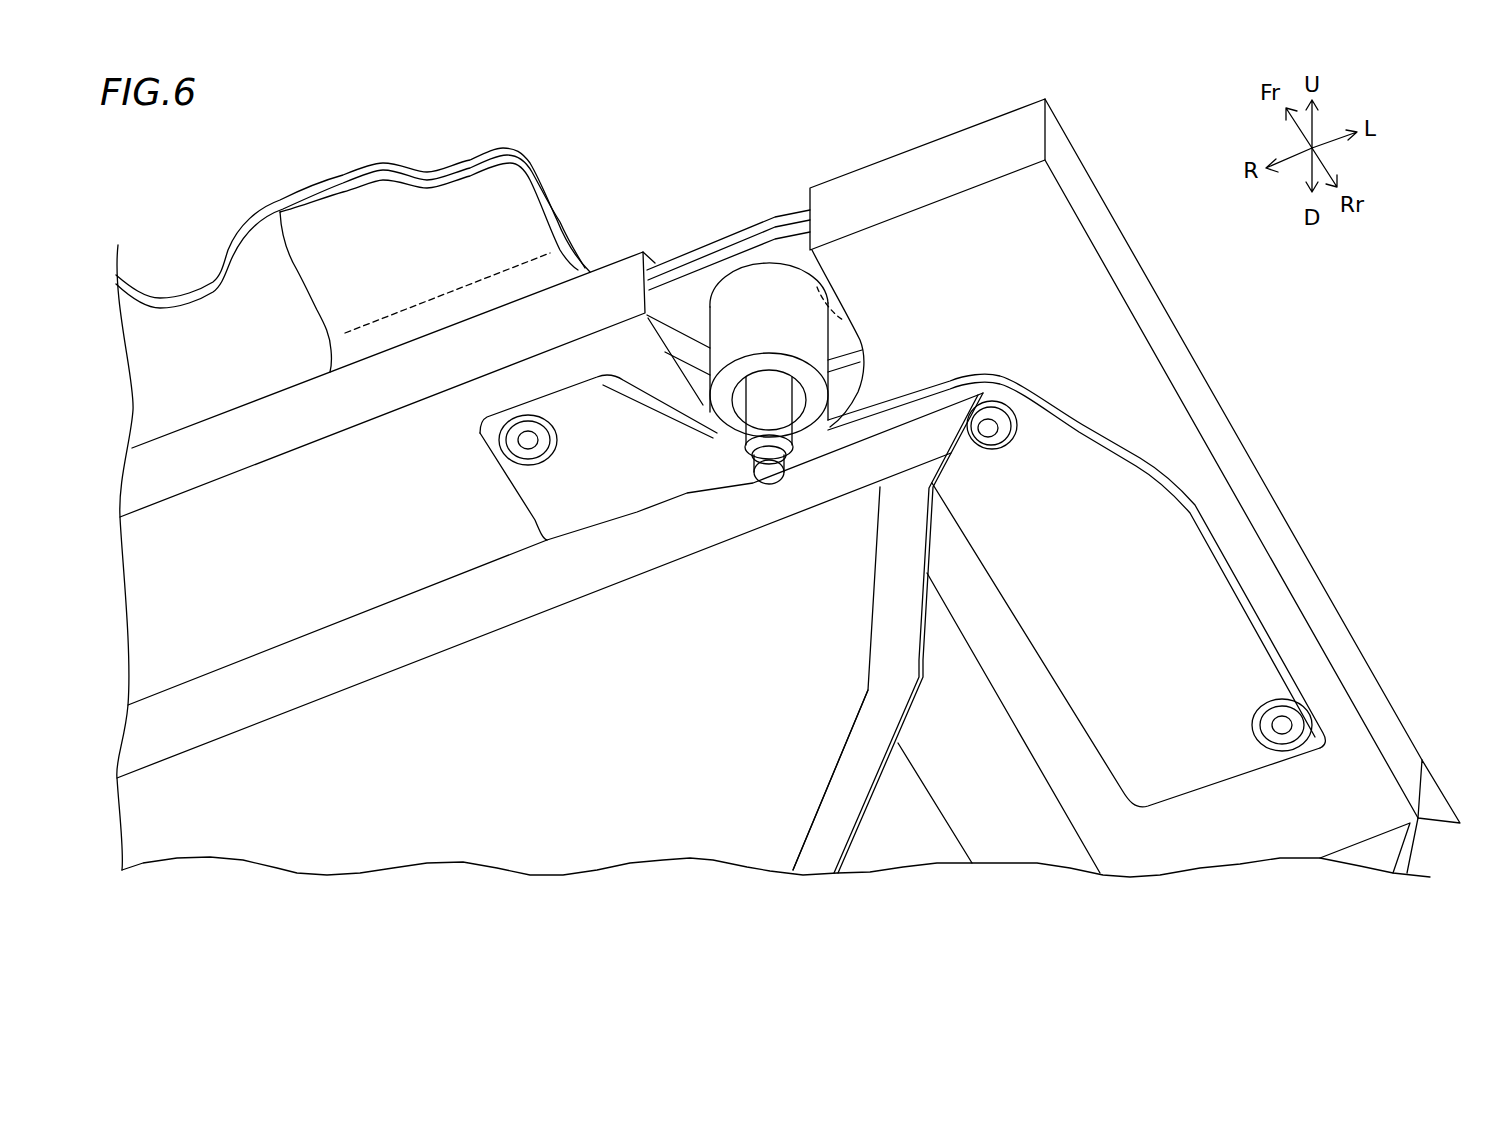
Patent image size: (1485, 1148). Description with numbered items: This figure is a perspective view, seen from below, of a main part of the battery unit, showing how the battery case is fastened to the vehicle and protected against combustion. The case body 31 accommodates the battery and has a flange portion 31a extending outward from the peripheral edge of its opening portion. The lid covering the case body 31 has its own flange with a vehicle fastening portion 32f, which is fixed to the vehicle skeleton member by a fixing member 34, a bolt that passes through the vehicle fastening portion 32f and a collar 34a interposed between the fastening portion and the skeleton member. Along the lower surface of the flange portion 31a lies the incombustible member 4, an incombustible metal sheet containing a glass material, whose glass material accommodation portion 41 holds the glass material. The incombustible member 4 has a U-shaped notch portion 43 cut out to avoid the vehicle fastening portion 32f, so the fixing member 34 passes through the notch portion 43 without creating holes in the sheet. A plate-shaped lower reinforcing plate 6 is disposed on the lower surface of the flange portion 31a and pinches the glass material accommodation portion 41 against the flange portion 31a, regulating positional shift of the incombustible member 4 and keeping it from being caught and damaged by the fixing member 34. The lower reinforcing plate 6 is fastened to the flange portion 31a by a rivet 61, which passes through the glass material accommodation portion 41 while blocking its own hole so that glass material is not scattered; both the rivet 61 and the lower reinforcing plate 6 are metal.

The incombustible member 4 is at (298, 793).
The glass material accommodation portion 41 is at (947, 163).
The vehicle fastening portion 32f is at (668, 302).
The notch portion 43 is at (817, 288).
The collar 34a is at (767, 292).
The fixing member 34 is at (763, 418).
The flange portion 31a is at (697, 420).
The lower reinforcing plate 6 is at (1170, 573).
The rivet 61 is at (528, 445).
The case body 31 is at (713, 797).